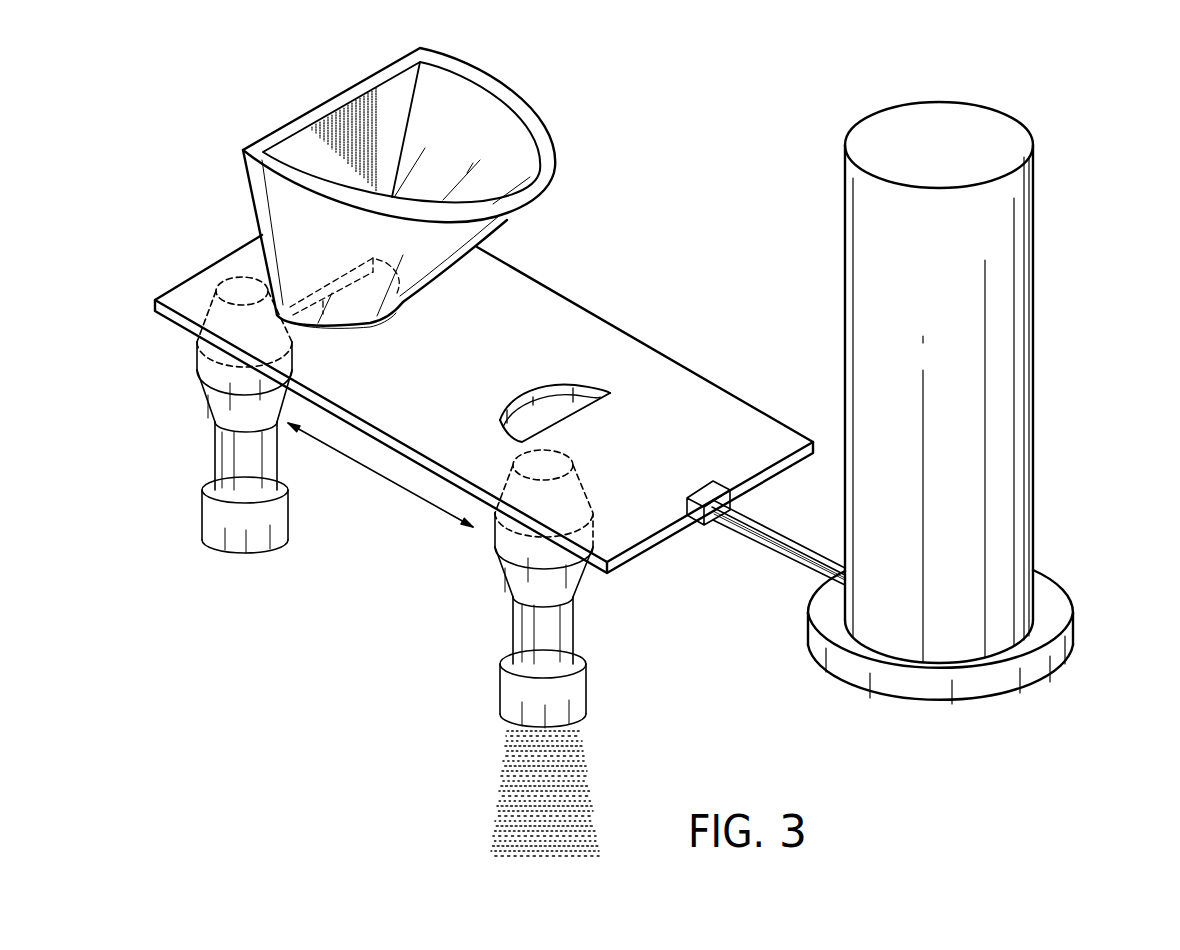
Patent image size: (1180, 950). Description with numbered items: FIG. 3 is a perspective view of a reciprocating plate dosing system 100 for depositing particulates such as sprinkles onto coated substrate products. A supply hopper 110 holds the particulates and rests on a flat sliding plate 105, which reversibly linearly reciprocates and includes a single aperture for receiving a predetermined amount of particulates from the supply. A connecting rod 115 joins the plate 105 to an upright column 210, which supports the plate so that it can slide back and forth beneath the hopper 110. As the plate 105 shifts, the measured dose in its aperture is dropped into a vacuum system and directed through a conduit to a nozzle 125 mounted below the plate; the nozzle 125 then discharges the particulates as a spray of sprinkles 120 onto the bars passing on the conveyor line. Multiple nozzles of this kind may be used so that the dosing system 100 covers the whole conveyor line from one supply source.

The apparatus / movement direction 100 is at (457, 415).
The plate 105 is at (302, 268).
The hopper / funnel 110 is at (217, 55).
The connecting rod 115 is at (757, 557).
The spray of particles 120 is at (583, 763).
The nozzle 125 is at (487, 627).
The column / support post 210 is at (1063, 335).